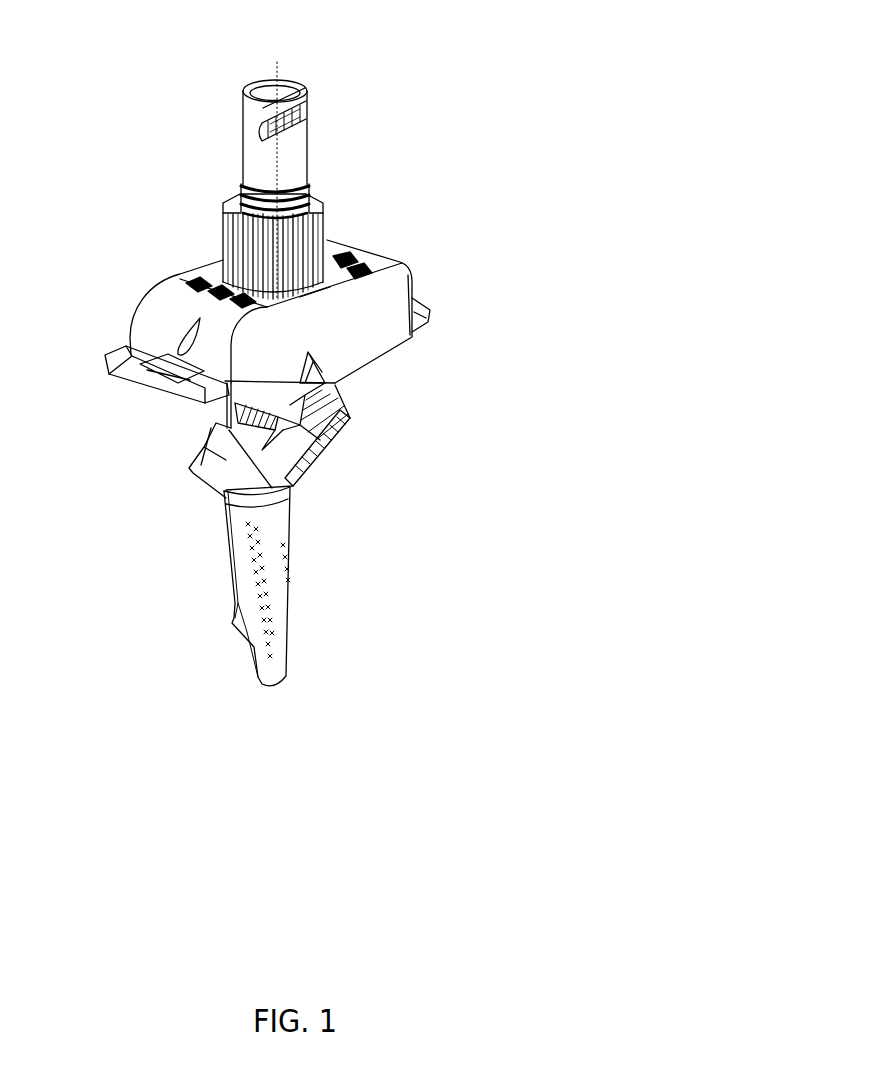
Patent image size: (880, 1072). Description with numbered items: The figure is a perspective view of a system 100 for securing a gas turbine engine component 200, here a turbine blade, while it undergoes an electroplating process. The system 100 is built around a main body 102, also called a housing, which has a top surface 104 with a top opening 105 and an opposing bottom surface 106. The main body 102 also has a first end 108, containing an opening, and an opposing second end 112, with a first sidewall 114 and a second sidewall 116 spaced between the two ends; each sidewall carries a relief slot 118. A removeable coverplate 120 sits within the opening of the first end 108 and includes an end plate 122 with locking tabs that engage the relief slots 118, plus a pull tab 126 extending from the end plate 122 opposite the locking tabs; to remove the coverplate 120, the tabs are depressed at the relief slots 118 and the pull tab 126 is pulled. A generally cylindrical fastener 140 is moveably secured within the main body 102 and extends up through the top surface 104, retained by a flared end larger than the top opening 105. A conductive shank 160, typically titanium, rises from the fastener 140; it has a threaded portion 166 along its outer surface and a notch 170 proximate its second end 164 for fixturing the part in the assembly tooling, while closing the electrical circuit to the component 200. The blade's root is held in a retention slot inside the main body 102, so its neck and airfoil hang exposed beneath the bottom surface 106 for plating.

The system 100 is at (515, 113).
The main body 102 is at (158, 279).
The top surface 104 is at (207, 272).
The top opening 105 is at (330, 275).
The bottom surface 106 is at (390, 352).
The first end 108 is at (130, 345).
The second end 112 is at (418, 300).
The first sidewall 114 is at (369, 334).
The second sidewall 116 is at (216, 250).
The relief slot 118 is at (310, 362).
The coverplate 120 is at (180, 416).
The end plate 122 is at (200, 412).
The pull tab 126 is at (162, 377).
The fastener 140 is at (222, 196).
The shank 160 is at (296, 74).
The second end 164 is at (268, 88).
The threaded portion 166 is at (300, 185).
The notch 170 is at (296, 136).
The gas turbine engine component 200 is at (299, 493).